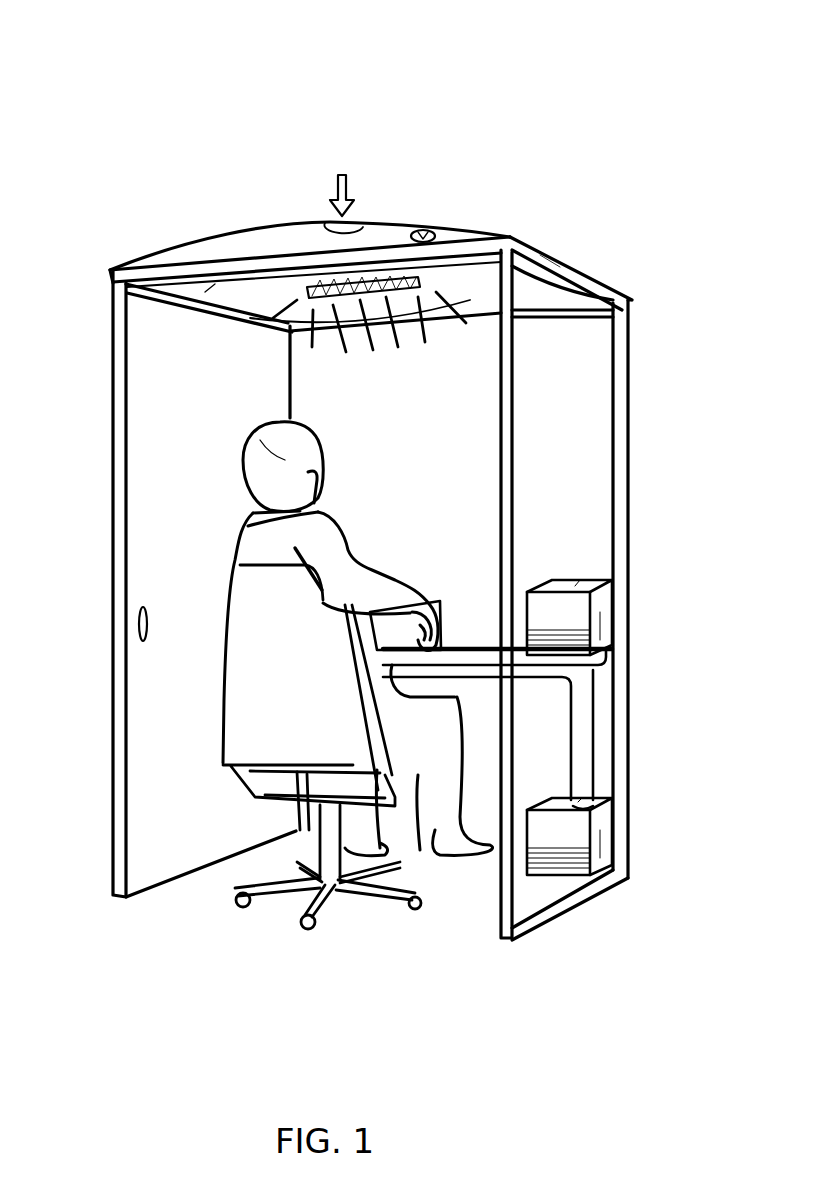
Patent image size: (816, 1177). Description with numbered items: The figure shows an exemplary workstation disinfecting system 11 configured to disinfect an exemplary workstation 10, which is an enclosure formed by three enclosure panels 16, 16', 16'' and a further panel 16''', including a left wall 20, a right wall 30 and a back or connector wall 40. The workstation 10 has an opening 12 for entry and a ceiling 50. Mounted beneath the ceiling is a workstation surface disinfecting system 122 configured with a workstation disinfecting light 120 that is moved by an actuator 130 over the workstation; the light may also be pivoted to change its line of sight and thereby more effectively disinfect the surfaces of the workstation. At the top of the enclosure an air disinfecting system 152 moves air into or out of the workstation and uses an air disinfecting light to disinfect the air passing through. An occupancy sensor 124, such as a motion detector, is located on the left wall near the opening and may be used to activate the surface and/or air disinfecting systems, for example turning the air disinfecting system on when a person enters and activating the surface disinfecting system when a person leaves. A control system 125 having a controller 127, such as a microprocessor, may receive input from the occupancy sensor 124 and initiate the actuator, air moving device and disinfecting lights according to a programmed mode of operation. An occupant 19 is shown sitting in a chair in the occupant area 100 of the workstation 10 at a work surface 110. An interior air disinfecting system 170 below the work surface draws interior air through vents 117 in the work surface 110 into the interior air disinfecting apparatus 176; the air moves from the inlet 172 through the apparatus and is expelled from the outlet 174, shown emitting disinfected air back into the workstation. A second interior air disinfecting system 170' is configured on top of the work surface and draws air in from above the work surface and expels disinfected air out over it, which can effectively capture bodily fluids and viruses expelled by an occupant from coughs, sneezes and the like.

The workstation disinfecting system 11 is at (130, 95).
The workstation 10 is at (112, 268).
The enclosure panel 16''' is at (184, 240).
The ceiling 50 is at (247, 252).
The air disinfecting system 152 is at (358, 222).
The control system 125 is at (412, 231).
The controller 127 is at (438, 230).
The actuator 130 is at (562, 262).
The workstation surface disinfecting system 122 is at (381, 322).
The workstation disinfecting light 120 is at (422, 320).
The occupant 19 is at (280, 466).
The left wall 20 is at (140, 522).
The enclosure panel 16 is at (198, 513).
The enclosure panel 16' is at (374, 498).
The enclosure panel 16'' is at (570, 403).
The back or connector wall 40 is at (421, 460).
The right wall 30 is at (578, 462).
The opening 12 is at (203, 553).
The occupancy sensor 124 is at (138, 626).
The work surface 110 is at (495, 640).
The vents 117 is at (470, 645).
The second interior air disinfecting system 170' is at (566, 596).
The inlet 172 is at (575, 598).
The interior air disinfecting apparatus 176 is at (604, 618).
The outlet 174 is at (610, 658).
The interior air disinfecting system 170 is at (567, 806).
The occupant area 100 is at (235, 875).